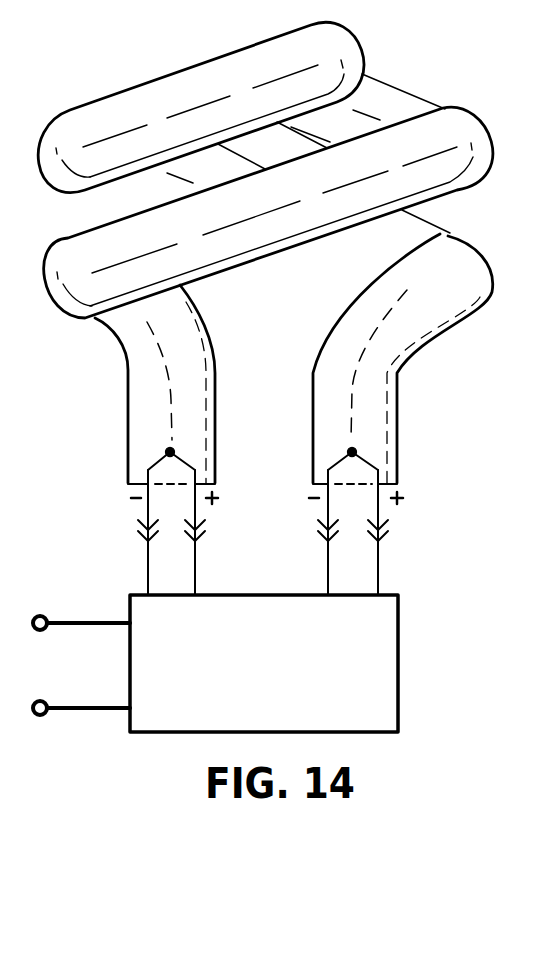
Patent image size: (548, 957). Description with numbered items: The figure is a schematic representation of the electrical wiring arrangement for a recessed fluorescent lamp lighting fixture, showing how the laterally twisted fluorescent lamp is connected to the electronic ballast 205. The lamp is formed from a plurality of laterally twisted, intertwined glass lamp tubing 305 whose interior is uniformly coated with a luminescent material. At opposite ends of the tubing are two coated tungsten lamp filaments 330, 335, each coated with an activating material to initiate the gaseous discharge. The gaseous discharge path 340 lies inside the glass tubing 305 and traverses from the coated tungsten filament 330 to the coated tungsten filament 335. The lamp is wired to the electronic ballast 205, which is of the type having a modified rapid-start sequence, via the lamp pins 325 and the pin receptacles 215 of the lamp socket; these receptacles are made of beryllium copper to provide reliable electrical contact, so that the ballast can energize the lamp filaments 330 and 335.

The lamp tubing 305 is at (358, 47).
The gaseous discharge path 340 is at (118, 133).
The coated tungsten lamp filament 330 is at (170, 452).
The coated tungsten lamp filament 335 is at (352, 452).
The pins 325 is at (148, 511).
The pin receptacles 215 is at (195, 546).
The electronic ballast 205 is at (398, 656).